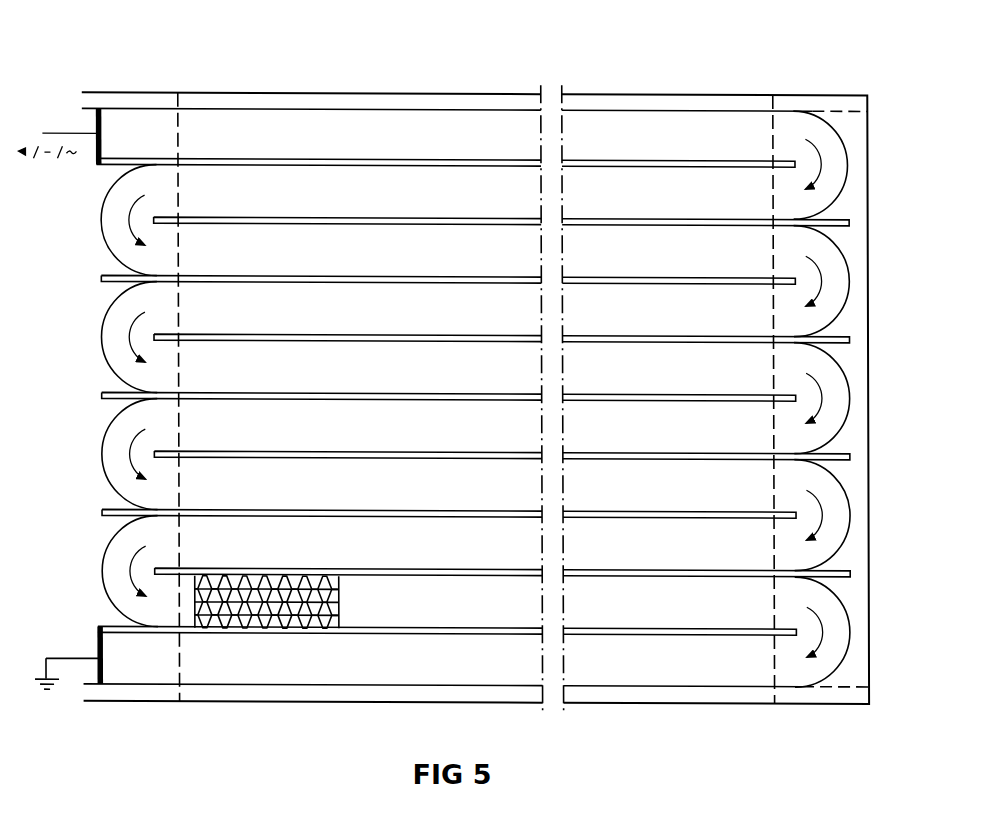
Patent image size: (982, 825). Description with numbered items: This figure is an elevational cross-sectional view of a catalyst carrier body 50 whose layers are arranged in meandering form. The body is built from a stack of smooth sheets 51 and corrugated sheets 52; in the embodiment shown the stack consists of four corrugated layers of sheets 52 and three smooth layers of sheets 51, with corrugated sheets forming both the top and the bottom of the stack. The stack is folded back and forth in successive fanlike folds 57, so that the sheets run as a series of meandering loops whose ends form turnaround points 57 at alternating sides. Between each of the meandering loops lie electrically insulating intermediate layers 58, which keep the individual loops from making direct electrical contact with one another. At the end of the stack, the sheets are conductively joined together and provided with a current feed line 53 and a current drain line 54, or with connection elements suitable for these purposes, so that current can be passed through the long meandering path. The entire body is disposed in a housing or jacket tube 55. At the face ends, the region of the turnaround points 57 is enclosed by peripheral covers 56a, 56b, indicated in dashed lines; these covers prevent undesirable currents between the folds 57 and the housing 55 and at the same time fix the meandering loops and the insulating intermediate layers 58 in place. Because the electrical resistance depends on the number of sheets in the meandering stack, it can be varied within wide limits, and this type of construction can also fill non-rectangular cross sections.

The catalyst carrier body 50 is at (503, 130).
The smooth sheets 51 is at (256, 603).
The corrugated sheets 52 is at (271, 606).
The current feed line 53 is at (103, 137).
The current drain line 54 is at (106, 640).
The housing or jacket tube 55 is at (422, 93).
The peripheral cover 56a is at (180, 138).
The peripheral cover 56b is at (772, 140).
The fanlike folds / turnaround points 57 is at (846, 140).
The electrically insulating intermediate layers 58 is at (353, 158).